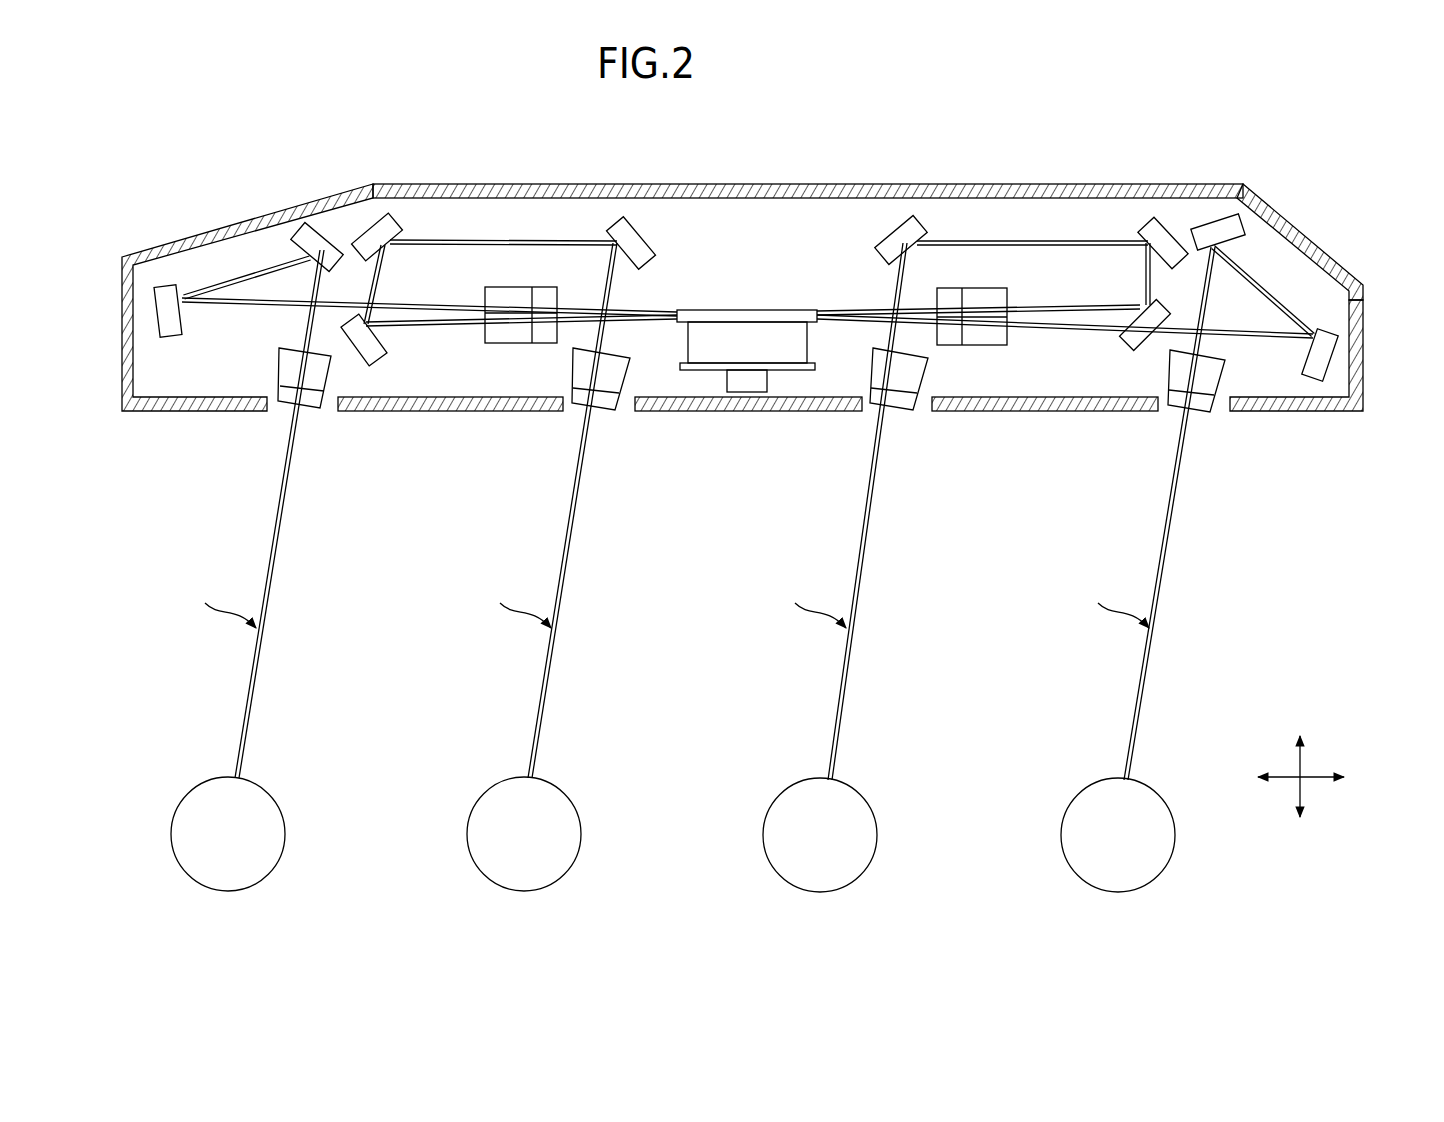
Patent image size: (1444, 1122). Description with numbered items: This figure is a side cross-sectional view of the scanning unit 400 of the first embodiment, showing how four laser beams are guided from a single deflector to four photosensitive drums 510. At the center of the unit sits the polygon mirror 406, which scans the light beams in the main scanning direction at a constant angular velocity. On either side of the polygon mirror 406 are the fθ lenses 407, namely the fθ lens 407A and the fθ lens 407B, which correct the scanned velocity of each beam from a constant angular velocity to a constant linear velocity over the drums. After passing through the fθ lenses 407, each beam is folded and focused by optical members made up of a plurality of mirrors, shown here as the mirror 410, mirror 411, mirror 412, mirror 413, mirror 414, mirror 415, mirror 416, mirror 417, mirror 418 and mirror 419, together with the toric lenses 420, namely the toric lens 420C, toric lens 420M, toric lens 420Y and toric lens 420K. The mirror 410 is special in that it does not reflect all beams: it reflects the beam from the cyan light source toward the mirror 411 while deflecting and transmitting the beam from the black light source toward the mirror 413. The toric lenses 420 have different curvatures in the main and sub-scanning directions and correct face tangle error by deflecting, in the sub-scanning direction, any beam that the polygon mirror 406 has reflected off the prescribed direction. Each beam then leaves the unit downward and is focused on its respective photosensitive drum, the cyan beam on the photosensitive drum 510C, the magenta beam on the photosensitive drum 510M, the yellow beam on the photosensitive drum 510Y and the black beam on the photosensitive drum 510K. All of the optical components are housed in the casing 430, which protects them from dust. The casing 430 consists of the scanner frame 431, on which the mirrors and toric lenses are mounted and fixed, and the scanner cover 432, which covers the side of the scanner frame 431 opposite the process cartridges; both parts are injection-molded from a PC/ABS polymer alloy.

The scanning unit 400 is at (778, 150).
The polygon mirror 406 is at (730, 310).
The fθ lenses 407 is at (777, 231).
The fθ lens 407A is at (984, 288).
The fθ lens 407B is at (515, 287).
The mirror 410 is at (1130, 338).
The mirror 411 is at (1172, 228).
The mirror 412 is at (889, 230).
The mirror 413 is at (1311, 383).
The mirror 414 is at (1220, 222).
The mirror 415 is at (376, 358).
The mirror 416 is at (369, 224).
The mirror 417 is at (638, 230).
The mirror 418 is at (163, 292).
The mirror 419 is at (326, 232).
The toric lenses 420 is at (693, 411).
The toric lens 420C is at (283, 404).
The toric lens 420M is at (580, 406).
The toric lens 420Y is at (880, 406).
The toric lens 420K is at (1176, 408).
The casing 430 is at (1320, 240).
The scanner frame 431 is at (1363, 388).
The scanner cover 432 is at (1092, 185).
The photosensitive drums 510 is at (642, 808).
The photosensitive drum 510C is at (197, 783).
The photosensitive drum 510M is at (494, 783).
The photosensitive drum 510Y is at (793, 783).
The photosensitive drum 510K is at (1090, 783).